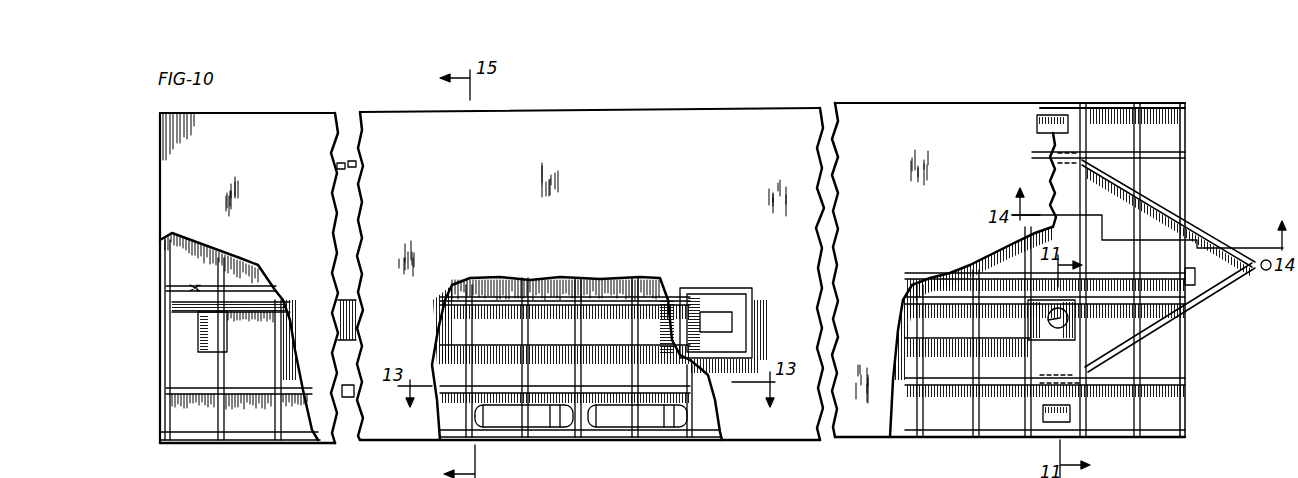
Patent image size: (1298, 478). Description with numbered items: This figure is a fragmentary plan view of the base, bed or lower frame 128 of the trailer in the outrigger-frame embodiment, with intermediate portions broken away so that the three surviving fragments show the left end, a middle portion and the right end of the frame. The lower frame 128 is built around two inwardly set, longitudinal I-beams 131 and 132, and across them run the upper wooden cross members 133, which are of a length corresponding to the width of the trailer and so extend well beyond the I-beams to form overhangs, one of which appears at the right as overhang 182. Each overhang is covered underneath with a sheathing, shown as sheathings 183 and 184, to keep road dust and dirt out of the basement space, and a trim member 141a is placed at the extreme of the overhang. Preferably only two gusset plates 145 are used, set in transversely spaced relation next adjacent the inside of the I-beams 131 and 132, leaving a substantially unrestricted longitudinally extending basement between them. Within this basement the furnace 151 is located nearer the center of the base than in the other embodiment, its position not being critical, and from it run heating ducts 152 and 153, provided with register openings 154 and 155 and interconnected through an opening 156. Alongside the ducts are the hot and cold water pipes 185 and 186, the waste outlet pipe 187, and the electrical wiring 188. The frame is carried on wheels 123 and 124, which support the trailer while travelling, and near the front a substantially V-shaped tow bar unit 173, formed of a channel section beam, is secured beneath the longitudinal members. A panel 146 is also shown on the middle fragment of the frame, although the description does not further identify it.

The lower frame 128 is at (731, 102).
The panel 146 is at (615, 125).
The furnace 151 is at (733, 300).
The heating duct 152 is at (493, 315).
The hot water pipe 185 is at (557, 297).
The cold water pipe 186 is at (653, 298).
The gusset plate 145 is at (627, 363).
The wheel 123 is at (540, 420).
The wheel 124 is at (658, 417).
The electrical wiring 188 is at (242, 283).
The waste outlet pipe 187 is at (200, 310).
The upper wooden cross member 133 is at (220, 367).
The sheathing 183 is at (192, 430).
The register opening 154 is at (1040, 115).
The heating duct 153 is at (1050, 175).
The sheathing 184 is at (1107, 117).
The trim member 141a is at (1143, 102).
The overhang 182 is at (1178, 99).
The longitudinal I-beam 132 is at (1163, 148).
The opening 156 is at (1047, 320).
The register opening 155 is at (1043, 410).
The tow bar unit 173 is at (1227, 288).
The longitudinal I-beam 131 is at (1167, 382).